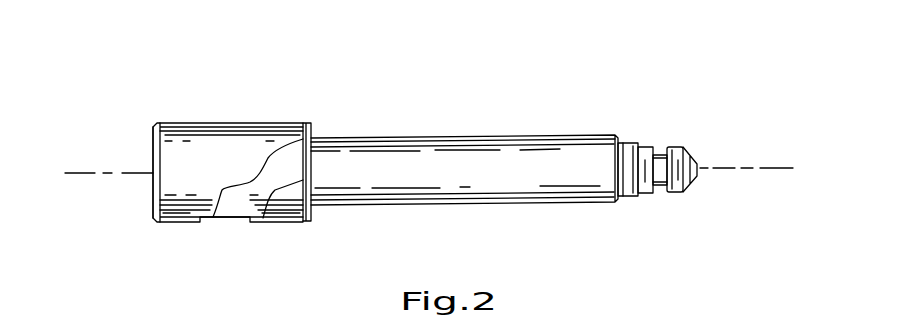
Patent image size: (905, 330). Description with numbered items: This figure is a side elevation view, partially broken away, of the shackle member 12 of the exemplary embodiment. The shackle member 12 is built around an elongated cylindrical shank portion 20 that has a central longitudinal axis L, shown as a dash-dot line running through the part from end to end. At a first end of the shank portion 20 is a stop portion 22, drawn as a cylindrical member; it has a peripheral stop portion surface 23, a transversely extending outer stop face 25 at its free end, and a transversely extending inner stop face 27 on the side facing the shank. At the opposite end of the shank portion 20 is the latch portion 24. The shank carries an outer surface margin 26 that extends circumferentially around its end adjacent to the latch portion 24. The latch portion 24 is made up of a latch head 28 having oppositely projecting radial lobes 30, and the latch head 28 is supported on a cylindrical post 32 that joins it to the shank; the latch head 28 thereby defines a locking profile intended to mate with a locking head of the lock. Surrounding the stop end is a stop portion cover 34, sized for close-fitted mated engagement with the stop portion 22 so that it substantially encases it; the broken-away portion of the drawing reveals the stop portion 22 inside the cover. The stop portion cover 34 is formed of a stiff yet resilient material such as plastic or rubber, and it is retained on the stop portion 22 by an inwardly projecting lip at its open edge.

The shackle member 12 is at (316, 87).
The shank portion 20 is at (414, 195).
The stop portion 22 is at (279, 188).
The peripheral stop portion surface 23 is at (223, 218).
The latch portion 24 is at (672, 116).
The outer stop face 25 is at (153, 202).
The outer surface margin 26 is at (523, 160).
The inner stop face 27 is at (318, 128).
The latch head 28 is at (697, 167).
The radial lobes 30 is at (683, 148).
The cylindrical post 32 is at (661, 185).
The stop portion cover 34 is at (200, 132).
The central longitudinal axis L is at (429, 172).